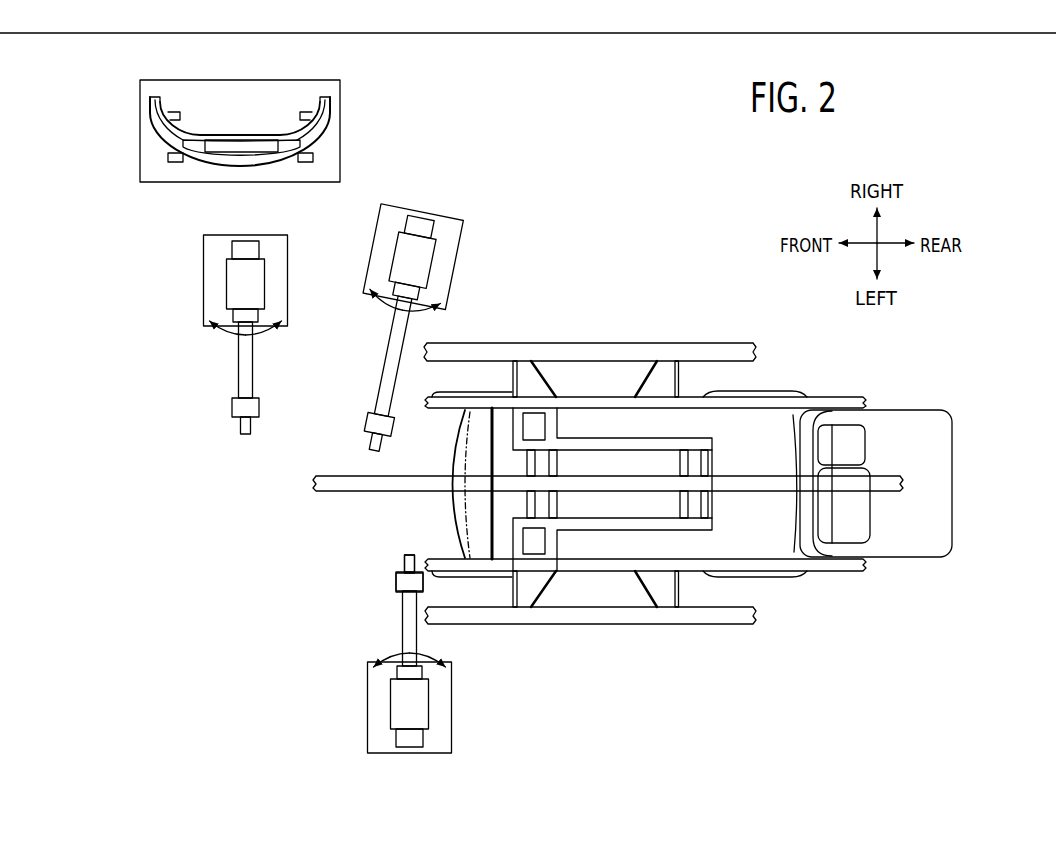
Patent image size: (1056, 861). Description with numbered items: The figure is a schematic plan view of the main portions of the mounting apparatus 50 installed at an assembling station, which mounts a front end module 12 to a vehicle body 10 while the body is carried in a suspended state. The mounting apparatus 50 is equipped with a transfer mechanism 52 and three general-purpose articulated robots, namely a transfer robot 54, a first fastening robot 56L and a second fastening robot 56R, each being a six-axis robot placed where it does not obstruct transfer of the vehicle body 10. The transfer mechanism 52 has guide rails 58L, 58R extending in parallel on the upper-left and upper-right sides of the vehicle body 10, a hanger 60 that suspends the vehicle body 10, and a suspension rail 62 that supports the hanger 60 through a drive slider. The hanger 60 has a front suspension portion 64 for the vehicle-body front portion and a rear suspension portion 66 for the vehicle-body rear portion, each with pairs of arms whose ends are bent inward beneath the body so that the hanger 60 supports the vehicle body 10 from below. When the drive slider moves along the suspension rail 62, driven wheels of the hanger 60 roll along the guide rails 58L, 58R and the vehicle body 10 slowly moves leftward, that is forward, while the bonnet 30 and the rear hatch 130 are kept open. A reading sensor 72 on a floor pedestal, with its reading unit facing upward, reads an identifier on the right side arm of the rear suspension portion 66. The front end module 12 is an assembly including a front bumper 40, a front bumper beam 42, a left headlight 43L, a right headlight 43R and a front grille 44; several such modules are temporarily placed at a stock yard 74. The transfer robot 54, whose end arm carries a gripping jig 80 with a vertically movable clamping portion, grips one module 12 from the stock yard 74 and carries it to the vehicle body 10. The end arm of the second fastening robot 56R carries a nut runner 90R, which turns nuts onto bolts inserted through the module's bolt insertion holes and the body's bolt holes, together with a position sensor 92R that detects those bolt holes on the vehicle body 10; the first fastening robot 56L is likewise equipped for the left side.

The vehicle body 10 is at (785, 424).
The front end module 12 is at (274, 111).
The bonnet 30 is at (457, 445).
The front bumper 40 is at (177, 163).
The front bumper beam 42 is at (239, 132).
The right headlight 43R is at (157, 126).
The left headlight 43L is at (322, 128).
The front grille 44 is at (263, 157).
The mounting apparatus 50 is at (82, 218).
The transfer mechanism 52 is at (626, 336).
The transfer robot 54 is at (230, 359).
The second fastening robot 56R is at (359, 368).
The first fastening robot 56L is at (395, 654).
The right guide rail 58R is at (777, 402).
The left guide rail 58L is at (838, 565).
The hanger 60 is at (661, 429).
The suspension rail 62 is at (877, 477).
The front suspension portion 64 is at (556, 381).
The rear suspension portion 66 is at (731, 381).
The reading sensor 72 is at (806, 390).
The stock yard 74 is at (328, 165).
The gripping jig 80 is at (220, 440).
The nut runner 90R is at (325, 466).
The position sensor 92R is at (338, 475).
The rear hatch 130 is at (938, 492).